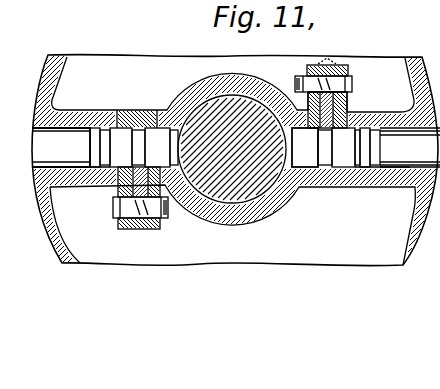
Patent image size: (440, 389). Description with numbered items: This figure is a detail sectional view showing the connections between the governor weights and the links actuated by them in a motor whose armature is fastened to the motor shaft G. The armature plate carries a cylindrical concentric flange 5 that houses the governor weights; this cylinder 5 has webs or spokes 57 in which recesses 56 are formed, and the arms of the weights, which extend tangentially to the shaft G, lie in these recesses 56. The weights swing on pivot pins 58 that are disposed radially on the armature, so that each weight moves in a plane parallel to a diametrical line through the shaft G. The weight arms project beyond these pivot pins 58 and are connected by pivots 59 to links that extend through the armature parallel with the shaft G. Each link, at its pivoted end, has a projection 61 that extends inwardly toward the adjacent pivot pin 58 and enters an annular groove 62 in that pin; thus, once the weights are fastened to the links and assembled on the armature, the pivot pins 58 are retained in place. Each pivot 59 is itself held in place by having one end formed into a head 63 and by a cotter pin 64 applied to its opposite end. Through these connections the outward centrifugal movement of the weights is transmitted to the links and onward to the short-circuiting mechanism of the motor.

The cylindrical concentric flange 5 is at (55, 238).
The recesses 56 is at (118, 124).
The webs or spokes 57 is at (83, 185).
The pivot pins 58 is at (163, 138).
The pivots 59 is at (163, 219).
The projection 61 is at (170, 207).
The annular groove 62 is at (142, 137).
The head 63 is at (113, 204).
The cotter pin 64 is at (172, 216).
The motor shaft G is at (260, 186).